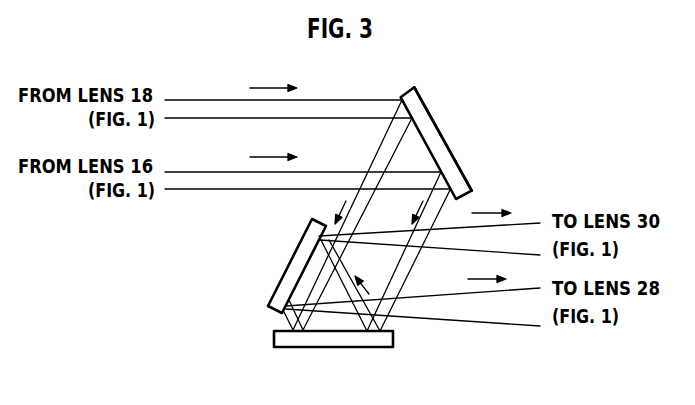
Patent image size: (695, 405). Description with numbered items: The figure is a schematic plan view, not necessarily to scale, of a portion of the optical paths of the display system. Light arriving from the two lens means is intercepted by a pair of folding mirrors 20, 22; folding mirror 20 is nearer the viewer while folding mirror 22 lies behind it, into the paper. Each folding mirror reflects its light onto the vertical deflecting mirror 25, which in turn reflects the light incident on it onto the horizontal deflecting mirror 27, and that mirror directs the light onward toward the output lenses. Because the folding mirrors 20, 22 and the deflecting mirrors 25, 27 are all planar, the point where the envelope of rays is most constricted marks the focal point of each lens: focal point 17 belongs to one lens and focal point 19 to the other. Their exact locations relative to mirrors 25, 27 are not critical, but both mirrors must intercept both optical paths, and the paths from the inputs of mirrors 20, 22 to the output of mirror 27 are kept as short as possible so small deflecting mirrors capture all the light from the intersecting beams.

The folding mirror 20 is at (415, 88).
The folding mirror 22 is at (458, 160).
The horizontal deflecting mirror 27 is at (294, 252).
The focal point 17 is at (346, 267).
The focal point 19 is at (280, 322).
The vertical deflecting mirror 25 is at (336, 351).